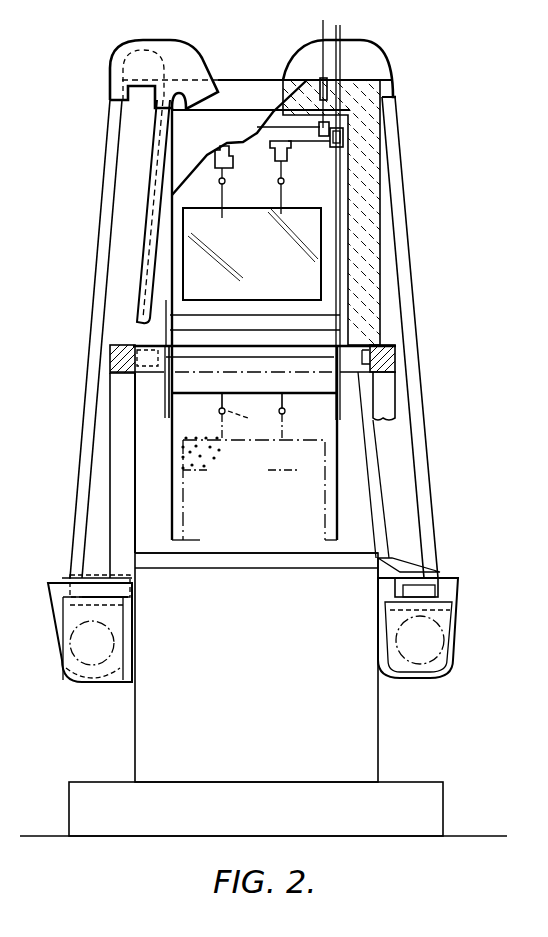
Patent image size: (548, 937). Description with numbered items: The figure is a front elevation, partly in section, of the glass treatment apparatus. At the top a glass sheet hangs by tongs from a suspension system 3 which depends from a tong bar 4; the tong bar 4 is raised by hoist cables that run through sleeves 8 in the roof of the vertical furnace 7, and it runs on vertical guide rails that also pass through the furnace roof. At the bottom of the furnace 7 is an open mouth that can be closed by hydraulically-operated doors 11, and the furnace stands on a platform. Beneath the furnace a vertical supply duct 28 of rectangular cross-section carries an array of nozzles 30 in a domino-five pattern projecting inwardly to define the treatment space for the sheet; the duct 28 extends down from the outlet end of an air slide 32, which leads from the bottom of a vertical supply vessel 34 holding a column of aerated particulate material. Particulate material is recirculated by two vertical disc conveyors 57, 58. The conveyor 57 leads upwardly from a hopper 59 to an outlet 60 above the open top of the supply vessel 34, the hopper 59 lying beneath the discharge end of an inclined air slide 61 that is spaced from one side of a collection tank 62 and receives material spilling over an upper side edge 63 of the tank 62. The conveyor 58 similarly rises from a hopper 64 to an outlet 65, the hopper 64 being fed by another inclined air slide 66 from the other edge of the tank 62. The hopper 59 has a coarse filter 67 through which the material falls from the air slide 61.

The suspension system 3 is at (276, 153).
The tong bar 4 is at (303, 135).
The vertical furnace 7 is at (370, 210).
The sleeves 8 is at (333, 92).
The hydraulically-operated doors 11 is at (220, 355).
The vertical supply duct 28 is at (327, 430).
The nozzles 30 is at (205, 445).
The air slide 32 is at (315, 387).
The vertical supply vessel 34 is at (247, 108).
The vertical disc conveyor 57 is at (403, 248).
The vertical disc conveyor 58 is at (102, 262).
The hopper 59 is at (402, 618).
The outlet 60 is at (312, 50).
The air slide 61 is at (396, 583).
The collection tank 62 is at (263, 694).
The upper side edge 63 is at (380, 558).
The hopper 64 is at (62, 625).
The outlet 65 is at (197, 48).
The air slide 66 is at (88, 575).
The coarse filter 67 is at (148, 553).